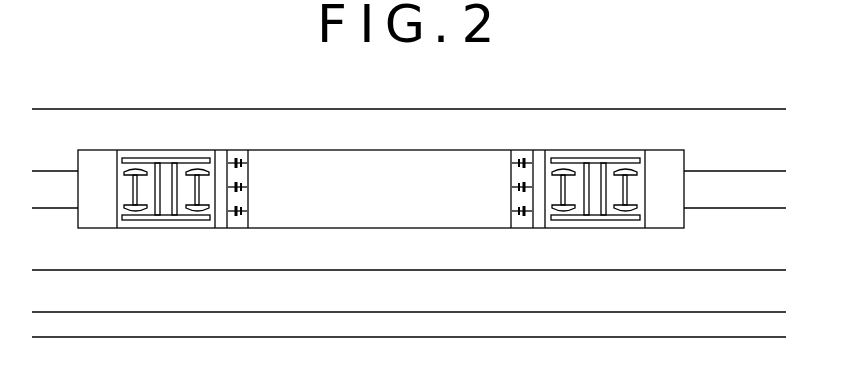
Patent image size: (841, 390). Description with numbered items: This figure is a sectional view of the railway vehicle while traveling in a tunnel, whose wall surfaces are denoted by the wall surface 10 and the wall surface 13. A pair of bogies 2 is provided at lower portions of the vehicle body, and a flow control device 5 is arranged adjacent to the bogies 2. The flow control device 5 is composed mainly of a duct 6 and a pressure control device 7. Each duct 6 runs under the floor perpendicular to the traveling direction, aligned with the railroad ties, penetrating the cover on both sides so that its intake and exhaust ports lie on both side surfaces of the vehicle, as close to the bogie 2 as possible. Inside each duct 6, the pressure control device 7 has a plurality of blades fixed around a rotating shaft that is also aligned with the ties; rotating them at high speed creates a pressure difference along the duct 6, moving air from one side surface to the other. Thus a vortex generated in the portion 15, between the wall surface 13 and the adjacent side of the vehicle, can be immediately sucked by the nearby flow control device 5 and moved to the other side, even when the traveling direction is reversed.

The wall surface of tunnel 10 is at (448, 108).
The wall surface of tunnel 13 is at (352, 338).
The bogie 2 is at (165, 221).
The portion 15 is at (228, 228).
The flow control device 5 is at (380, 203).
The duct 6 is at (246, 228).
The pressure control device 7 is at (380, 187).